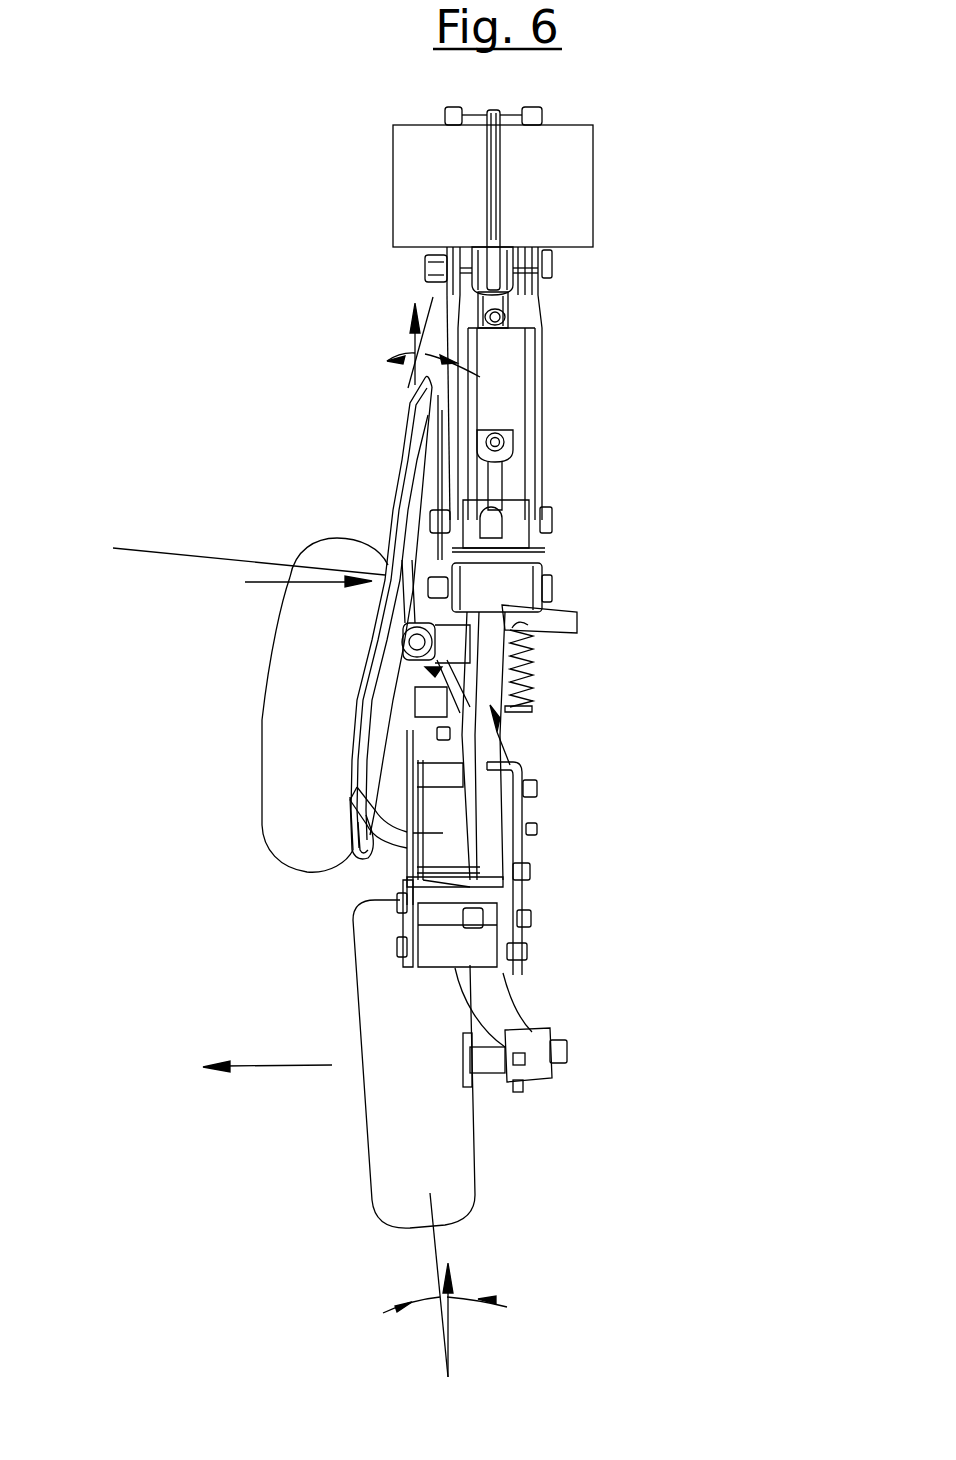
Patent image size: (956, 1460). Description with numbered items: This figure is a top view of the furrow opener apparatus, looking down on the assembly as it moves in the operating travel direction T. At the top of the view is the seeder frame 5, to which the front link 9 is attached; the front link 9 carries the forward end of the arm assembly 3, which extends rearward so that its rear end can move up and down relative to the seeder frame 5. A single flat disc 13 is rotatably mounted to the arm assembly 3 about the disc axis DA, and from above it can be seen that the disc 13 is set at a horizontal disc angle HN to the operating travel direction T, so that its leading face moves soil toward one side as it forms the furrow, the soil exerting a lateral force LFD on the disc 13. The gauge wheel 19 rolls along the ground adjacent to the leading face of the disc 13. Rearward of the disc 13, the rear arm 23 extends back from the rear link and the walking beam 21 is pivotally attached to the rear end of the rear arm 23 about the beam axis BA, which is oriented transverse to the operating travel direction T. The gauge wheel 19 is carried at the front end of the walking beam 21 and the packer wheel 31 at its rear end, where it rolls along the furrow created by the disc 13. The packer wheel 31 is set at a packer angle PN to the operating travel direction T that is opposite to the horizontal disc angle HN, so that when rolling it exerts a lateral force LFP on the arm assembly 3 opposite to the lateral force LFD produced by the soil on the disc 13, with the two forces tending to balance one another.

The seeder frame 5 is at (593, 183).
The front link 9 is at (552, 294).
The arm assembly 3 is at (560, 358).
The disc 13 is at (388, 515).
The gauge wheel 19 is at (262, 758).
The rear arm 23 is at (523, 907).
The walking beam 21 is at (520, 1013).
The packer wheel 31 is at (363, 1115).
The operating travel direction T is at (431, 823).
The horizontal disc angle HN is at (385, 362).
The disc axis DA is at (229, 555).
The lateral force exerted by soil on the disc LFD is at (280, 587).
The lateral force exerted by the packer wheel LFP is at (241, 1072).
The beam axis BA is at (397, 942).
The packer angle PN is at (384, 1313).